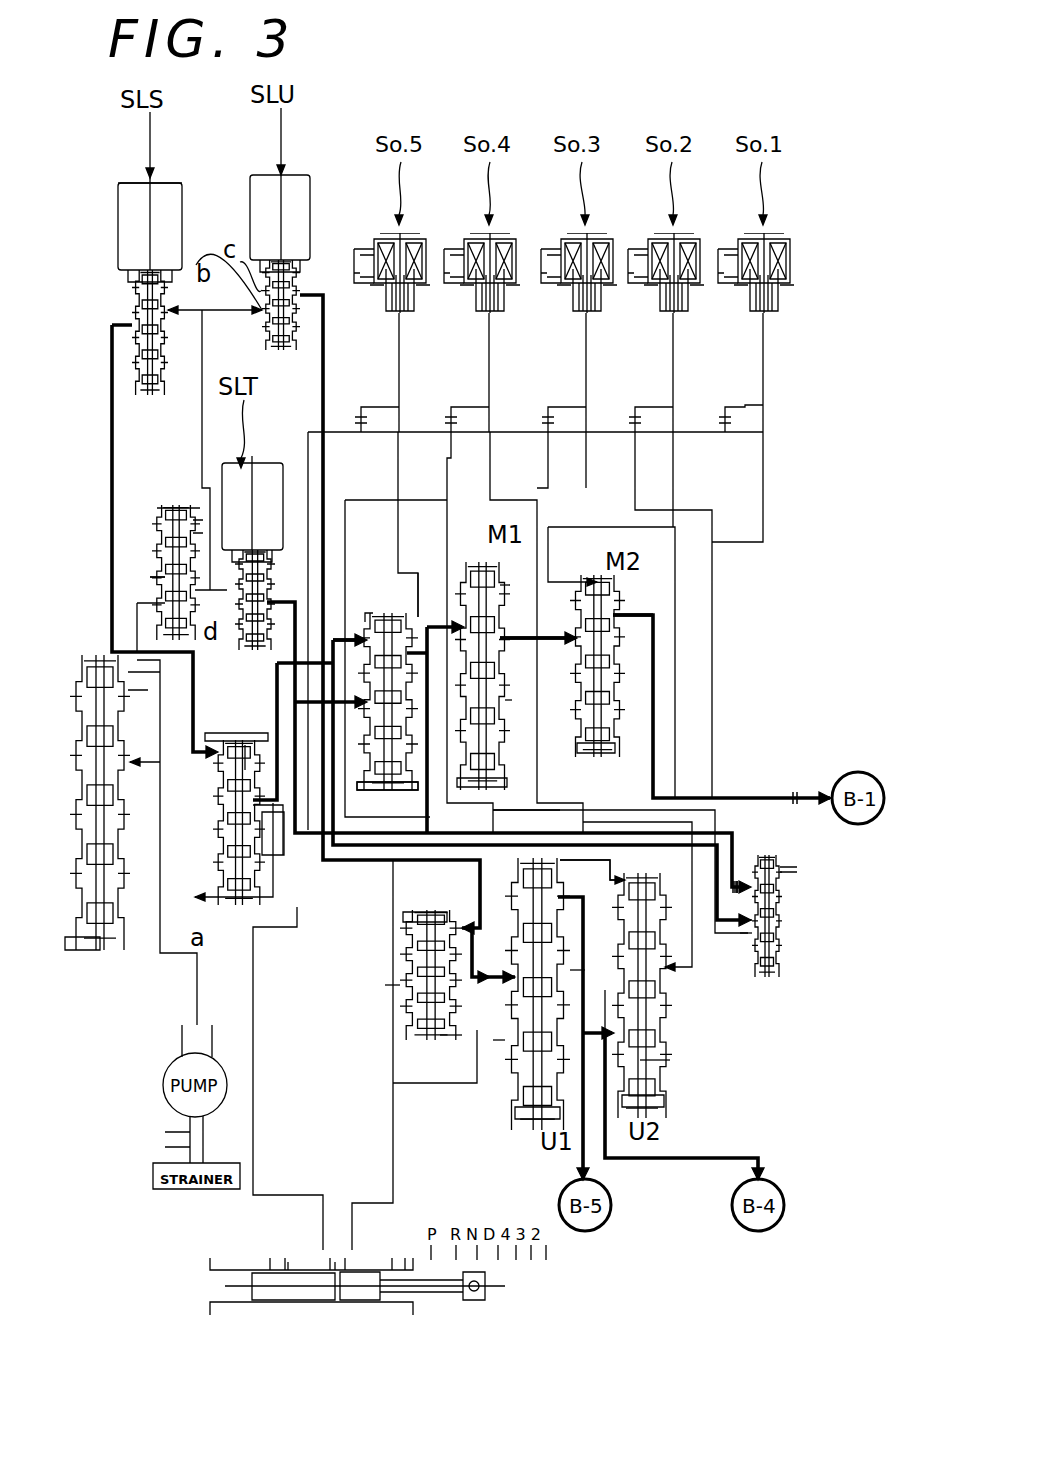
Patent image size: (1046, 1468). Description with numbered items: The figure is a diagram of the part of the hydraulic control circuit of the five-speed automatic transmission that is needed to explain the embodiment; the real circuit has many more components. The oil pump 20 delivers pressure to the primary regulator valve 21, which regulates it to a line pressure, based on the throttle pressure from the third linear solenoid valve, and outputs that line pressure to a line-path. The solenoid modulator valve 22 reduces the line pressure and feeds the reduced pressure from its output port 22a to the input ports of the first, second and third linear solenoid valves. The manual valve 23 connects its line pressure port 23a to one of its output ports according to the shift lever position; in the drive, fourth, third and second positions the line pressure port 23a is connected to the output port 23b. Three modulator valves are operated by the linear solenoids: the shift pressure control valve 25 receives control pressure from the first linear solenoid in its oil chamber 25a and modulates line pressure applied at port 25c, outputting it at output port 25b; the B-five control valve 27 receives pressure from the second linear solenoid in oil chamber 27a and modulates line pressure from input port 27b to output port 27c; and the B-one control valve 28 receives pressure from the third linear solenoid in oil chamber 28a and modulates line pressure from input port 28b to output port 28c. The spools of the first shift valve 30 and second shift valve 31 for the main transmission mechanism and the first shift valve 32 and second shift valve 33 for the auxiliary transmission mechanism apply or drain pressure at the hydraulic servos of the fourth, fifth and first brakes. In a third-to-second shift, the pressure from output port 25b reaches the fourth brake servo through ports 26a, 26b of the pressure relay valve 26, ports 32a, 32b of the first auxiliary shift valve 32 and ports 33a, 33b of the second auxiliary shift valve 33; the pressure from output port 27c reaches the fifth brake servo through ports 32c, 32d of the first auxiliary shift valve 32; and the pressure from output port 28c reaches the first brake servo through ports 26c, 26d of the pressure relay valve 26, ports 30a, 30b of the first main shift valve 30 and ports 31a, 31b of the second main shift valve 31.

The oil pump 20 is at (170, 1075).
The primary regulator valve 21 is at (98, 655).
The solenoid modulator valve 22 is at (182, 503).
The output port 22a is at (158, 577).
The manual valve 23 is at (232, 1255).
The line pressure port 23a is at (300, 1268).
The output port 23b is at (335, 1262).
The shift pressure control valve 25 is at (215, 720).
The oil chamber 25a is at (215, 758).
The output port 25b is at (250, 745).
The port 25c is at (272, 855).
The pressure relay valve 26 is at (380, 590).
The port 26a is at (340, 640).
The port 26b is at (412, 730).
The port 26c is at (372, 628).
The port 26d is at (428, 615).
The B5 control valve 27 is at (420, 1048).
The oil chamber 27a is at (462, 926).
The input port 27b is at (392, 985).
The output port 27c is at (455, 1038).
The B1 control valve 28 is at (805, 876).
The oil chamber 28a is at (745, 880).
The input port 28b is at (745, 935).
The output port 28c is at (778, 908).
The first (M1) shift valve 30 is at (482, 572).
The port 30a is at (500, 587).
The port 30b is at (508, 690).
The second (M2) shift valve 31 is at (592, 578).
The port 31a is at (580, 640).
The port 31b is at (620, 615).
The first (U1) shift valve 32 is at (533, 1136).
The port 32a is at (515, 1010).
The port 32b is at (570, 970).
The port 32c is at (530, 835).
The port 32d is at (575, 868).
The second (U2) shift valve 33 is at (676, 1119).
The port 33a is at (655, 1030).
The port 33b is at (655, 1062).